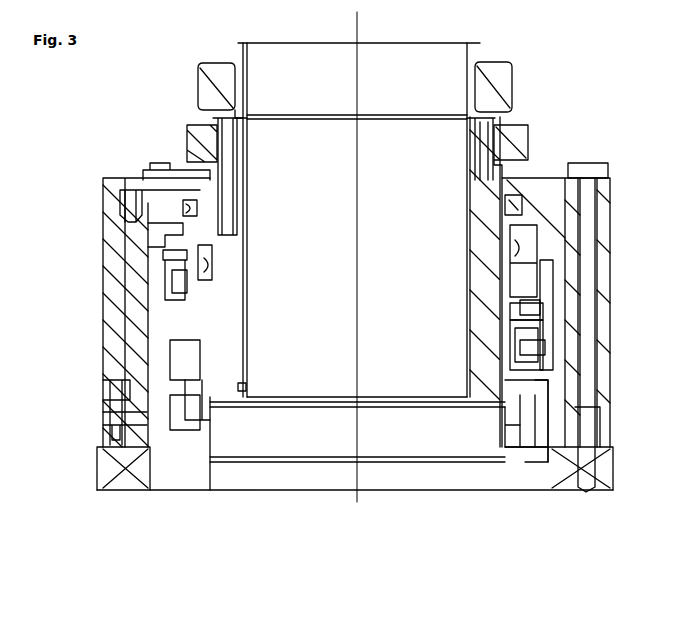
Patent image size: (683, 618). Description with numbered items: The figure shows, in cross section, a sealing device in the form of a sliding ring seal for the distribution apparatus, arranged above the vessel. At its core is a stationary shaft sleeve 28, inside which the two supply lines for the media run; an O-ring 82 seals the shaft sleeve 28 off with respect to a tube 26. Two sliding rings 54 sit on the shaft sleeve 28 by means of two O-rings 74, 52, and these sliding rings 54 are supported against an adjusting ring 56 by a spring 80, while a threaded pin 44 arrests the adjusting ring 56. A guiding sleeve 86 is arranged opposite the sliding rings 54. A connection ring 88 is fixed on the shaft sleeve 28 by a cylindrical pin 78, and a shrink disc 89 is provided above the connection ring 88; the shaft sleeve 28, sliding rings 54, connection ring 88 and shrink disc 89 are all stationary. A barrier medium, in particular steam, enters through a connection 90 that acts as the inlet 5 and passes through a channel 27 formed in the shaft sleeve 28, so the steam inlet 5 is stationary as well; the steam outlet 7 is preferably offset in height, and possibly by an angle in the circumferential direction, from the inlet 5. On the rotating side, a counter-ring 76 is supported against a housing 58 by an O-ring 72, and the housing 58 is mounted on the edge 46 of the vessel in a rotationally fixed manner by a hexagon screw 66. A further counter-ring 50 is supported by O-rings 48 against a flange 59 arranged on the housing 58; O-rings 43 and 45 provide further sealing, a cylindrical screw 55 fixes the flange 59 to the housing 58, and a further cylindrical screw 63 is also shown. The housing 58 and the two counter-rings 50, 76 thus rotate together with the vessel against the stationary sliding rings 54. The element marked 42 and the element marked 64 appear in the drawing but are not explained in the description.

The inlet 5 is at (175, 146).
The steam outlet 7 is at (110, 390).
The tube 26 is at (238, 115).
The channel 27 is at (228, 183).
The shaft sleeve 28 is at (244, 303).
The sensor 42 is at (510, 370).
The O-ring 43 is at (145, 428).
The threaded pin 44 is at (507, 311).
The O-ring 45 is at (183, 445).
The edge 46 is at (560, 457).
The O-rings 48 is at (528, 420).
The further counter-ring 50 is at (500, 430).
The O-ring 52 is at (200, 395).
The sliding rings 54 is at (175, 265).
The cylindrical screw 55 is at (145, 417).
The adjusting ring 56 is at (185, 290).
The housing 58 is at (117, 272).
The flange 59 is at (538, 455).
The cylindrical screw 63 is at (140, 215).
The stud 64 is at (218, 120).
The hexagon screw 66 is at (588, 200).
The O-ring 72 is at (225, 190).
The O-ring 74 is at (228, 258).
The counter-ring 76 is at (515, 226).
The cylindrical pin 78 is at (470, 128).
The spring 80 is at (530, 352).
The O-ring 82 is at (248, 395).
The guiding sleeve 86 is at (540, 342).
The connection ring 88 is at (513, 130).
The shrink disc 89 is at (500, 78).
The connection 90 is at (192, 147).